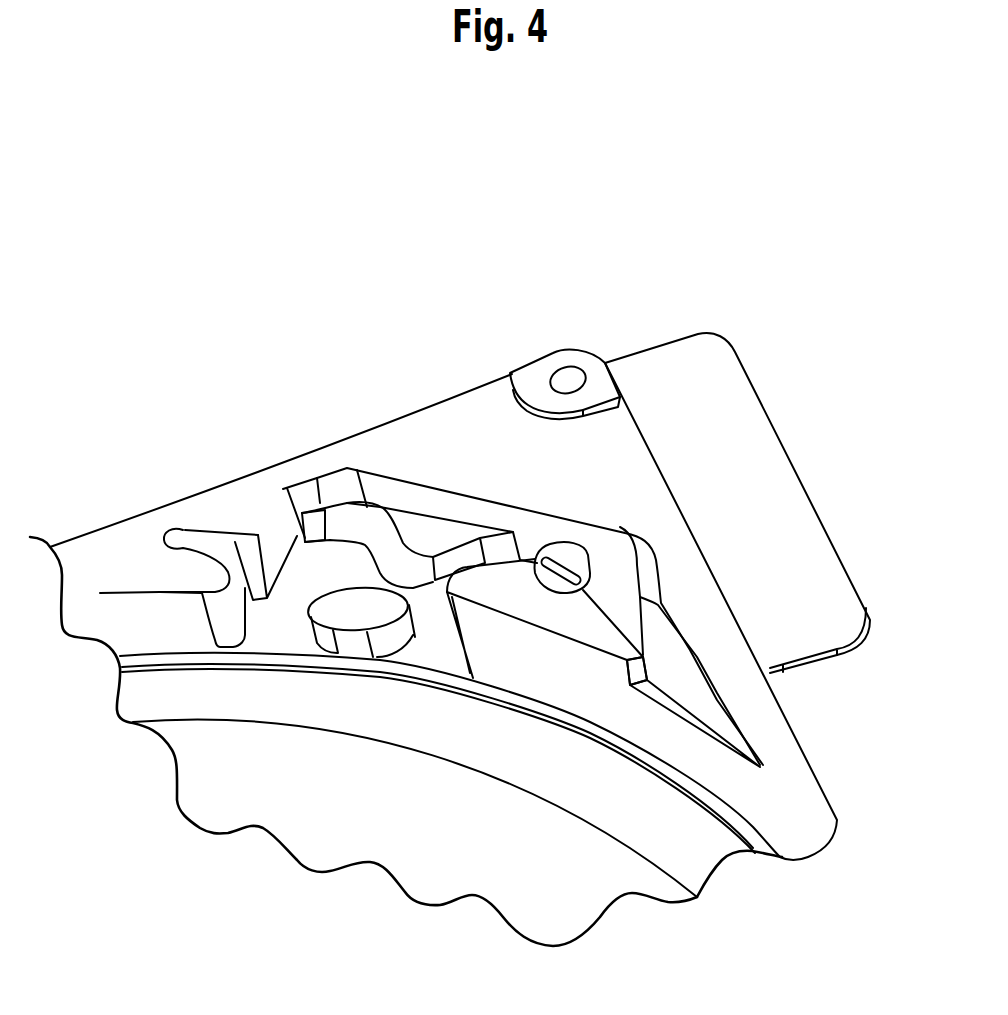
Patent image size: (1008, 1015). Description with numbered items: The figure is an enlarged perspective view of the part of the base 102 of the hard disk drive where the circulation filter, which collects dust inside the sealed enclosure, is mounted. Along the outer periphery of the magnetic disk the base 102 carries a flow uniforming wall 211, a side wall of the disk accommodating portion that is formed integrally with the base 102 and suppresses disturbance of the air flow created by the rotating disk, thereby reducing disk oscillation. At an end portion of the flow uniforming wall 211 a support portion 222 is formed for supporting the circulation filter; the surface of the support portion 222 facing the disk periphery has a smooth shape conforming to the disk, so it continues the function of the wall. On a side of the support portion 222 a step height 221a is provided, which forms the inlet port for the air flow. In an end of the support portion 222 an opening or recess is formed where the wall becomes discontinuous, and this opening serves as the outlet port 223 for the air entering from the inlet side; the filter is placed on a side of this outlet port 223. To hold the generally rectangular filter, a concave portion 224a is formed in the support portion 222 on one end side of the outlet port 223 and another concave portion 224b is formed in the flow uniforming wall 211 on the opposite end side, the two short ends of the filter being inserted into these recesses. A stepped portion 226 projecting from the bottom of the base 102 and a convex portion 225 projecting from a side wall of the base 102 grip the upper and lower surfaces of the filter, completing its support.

The base 102 is at (465, 377).
The flow uniforming wall 211 is at (750, 792).
The step height for inlet port 221a is at (652, 675).
The support portion 222 is at (588, 602).
The outlet port 223 is at (227, 612).
The concave portion 224a is at (578, 580).
The concave portion 224b is at (173, 528).
The convex portion 225 is at (395, 533).
The stepped portion 226 is at (340, 600).